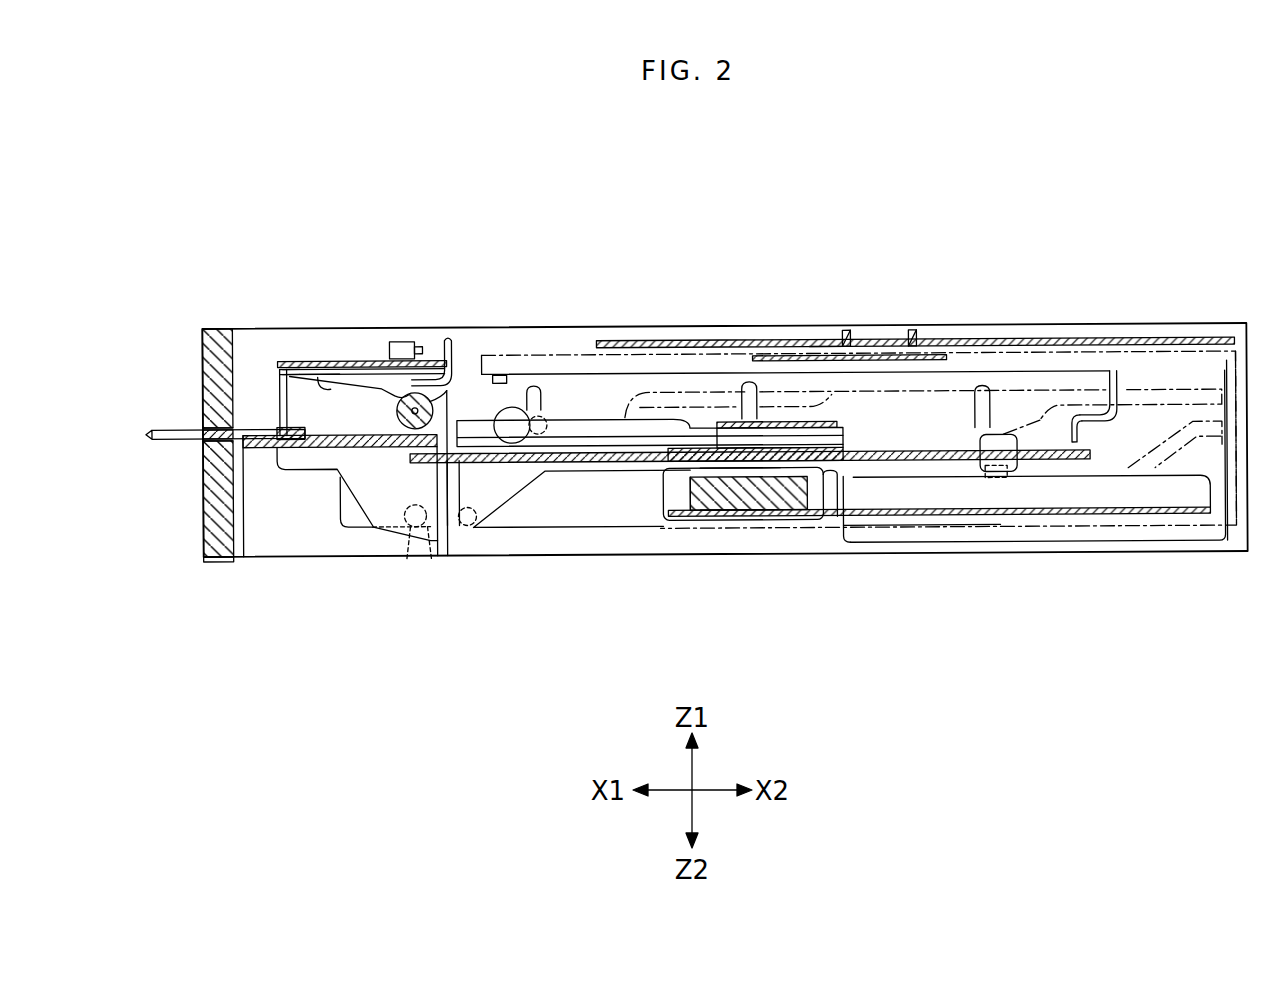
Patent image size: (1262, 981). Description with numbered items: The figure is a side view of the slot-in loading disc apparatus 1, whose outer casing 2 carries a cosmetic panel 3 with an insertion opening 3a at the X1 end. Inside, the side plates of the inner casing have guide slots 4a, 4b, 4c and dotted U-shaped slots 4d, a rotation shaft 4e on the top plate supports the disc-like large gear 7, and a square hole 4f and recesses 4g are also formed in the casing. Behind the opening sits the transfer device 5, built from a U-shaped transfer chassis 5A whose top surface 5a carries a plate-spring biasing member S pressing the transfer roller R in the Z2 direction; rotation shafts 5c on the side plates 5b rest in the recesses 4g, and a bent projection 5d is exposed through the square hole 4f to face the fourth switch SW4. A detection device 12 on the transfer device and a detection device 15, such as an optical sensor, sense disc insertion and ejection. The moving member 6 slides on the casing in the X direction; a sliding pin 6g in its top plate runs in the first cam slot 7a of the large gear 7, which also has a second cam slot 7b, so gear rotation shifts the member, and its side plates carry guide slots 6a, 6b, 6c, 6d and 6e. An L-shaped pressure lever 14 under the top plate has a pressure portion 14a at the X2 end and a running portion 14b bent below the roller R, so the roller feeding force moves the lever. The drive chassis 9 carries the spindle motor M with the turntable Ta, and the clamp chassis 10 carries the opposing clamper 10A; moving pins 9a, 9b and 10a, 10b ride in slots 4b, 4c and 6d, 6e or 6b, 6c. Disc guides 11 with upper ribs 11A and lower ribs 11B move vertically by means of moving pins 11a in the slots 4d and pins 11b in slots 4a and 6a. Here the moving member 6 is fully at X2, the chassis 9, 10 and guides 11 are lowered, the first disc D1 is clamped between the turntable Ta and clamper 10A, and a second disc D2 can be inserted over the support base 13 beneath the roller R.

The disc apparatus 1 is at (845, 220).
The outer casing 2 is at (1067, 329).
The cosmetic panel 3 is at (203, 345).
The insertion opening 3a is at (203, 446).
The guide slot 4a is at (538, 392).
The guide slot 4b is at (750, 385).
The guide slot 4c is at (982, 390).
The U-shaped slot 4d is at (456, 545).
The rotation shaft 4e is at (913, 334).
The square hole 4f is at (453, 350).
The recess 4g is at (425, 540).
The transfer device 5 is at (340, 508).
The top surface 5a is at (368, 365).
The transfer chassis 5A is at (421, 362).
The side plate 5b is at (350, 530).
The rotation shaft 5c is at (412, 530).
The projection 5d is at (450, 380).
The moving member 6 is at (663, 340).
The guide slot 6a is at (700, 395).
The guide slot 6b is at (880, 395).
The guide slot 6c is at (1222, 357).
The guide slot 6d is at (868, 546).
The guide slot 6e is at (1100, 531).
The sliding pin 6g is at (847, 334).
The large gear 7 is at (1034, 332).
The first cam slot 7a is at (832, 343).
The second cam slot 7b is at (720, 359).
The drive chassis 9 is at (1176, 519).
The moving pin 9a is at (740, 522).
The moving pin 9b is at (987, 519).
The clamp chassis 10 is at (929, 490).
The clamper 10A is at (792, 425).
The moving pin 10a is at (735, 480).
The moving pin 10b is at (1007, 482).
The disc guide 11 is at (522, 510).
The moving pin 11a is at (470, 527).
The upper rib 11A is at (590, 438).
The moving pin 11b is at (540, 420).
The lower rib 11B is at (600, 466).
The detection device 12 is at (366, 380).
The support base 13 is at (256, 450).
The pressure lever 14 is at (1127, 378).
The pressure portion 14a is at (1085, 432).
The running portion 14b is at (283, 370).
The detection device 15 is at (500, 377).
The first disc D1 is at (1062, 519).
The second disc D2 is at (192, 430).
The spindle motor M is at (665, 523).
The transfer roller R is at (397, 410).
The biasing member S is at (308, 365).
The fourth switch SW4 is at (404, 343).
The turntable Ta is at (693, 510).